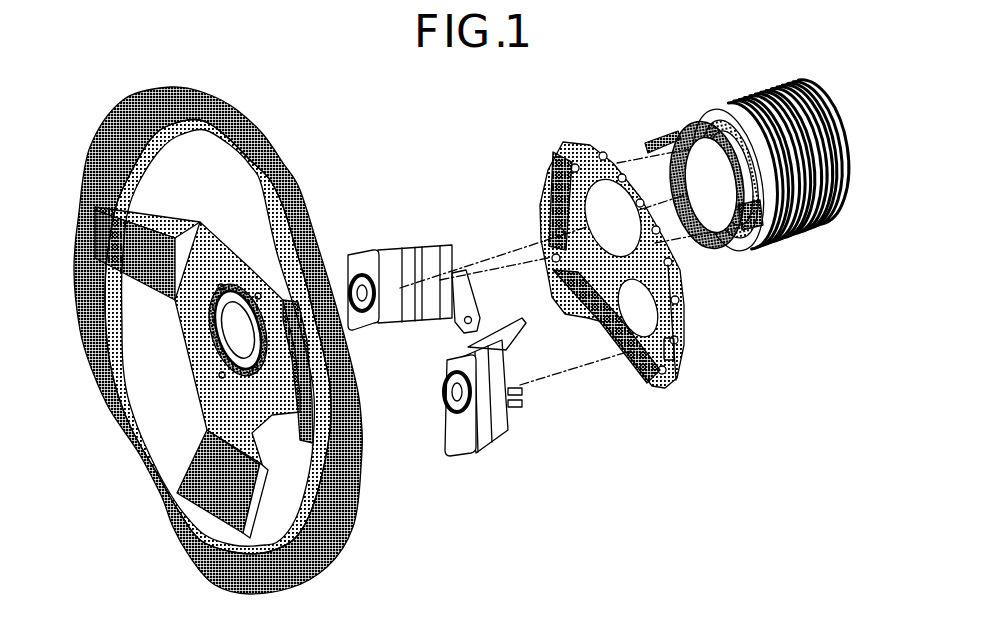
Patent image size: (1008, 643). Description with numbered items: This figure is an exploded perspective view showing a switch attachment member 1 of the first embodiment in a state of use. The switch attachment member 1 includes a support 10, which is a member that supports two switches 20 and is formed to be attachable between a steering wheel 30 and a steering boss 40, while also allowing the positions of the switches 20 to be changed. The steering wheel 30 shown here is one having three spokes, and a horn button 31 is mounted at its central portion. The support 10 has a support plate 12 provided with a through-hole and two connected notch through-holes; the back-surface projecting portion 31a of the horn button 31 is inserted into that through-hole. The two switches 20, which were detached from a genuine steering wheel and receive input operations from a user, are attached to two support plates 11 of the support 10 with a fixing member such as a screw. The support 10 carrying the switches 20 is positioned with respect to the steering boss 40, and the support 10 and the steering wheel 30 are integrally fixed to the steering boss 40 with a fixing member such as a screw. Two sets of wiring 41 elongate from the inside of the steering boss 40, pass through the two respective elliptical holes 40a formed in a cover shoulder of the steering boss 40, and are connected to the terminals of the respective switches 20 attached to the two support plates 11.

The switch attachment member 1 is at (629, 466).
The support 10 is at (587, 264).
The support plates 11 is at (545, 205).
The support plate 12 is at (586, 138).
The switches 20 is at (368, 251).
The steering wheel 30 is at (267, 151).
The horn button 31 is at (218, 350).
The back-surface projecting portion 31a is at (323, 250).
The steering boss 40 is at (765, 194).
The elliptical holes 40a is at (741, 245).
The wiring 41 is at (655, 145).